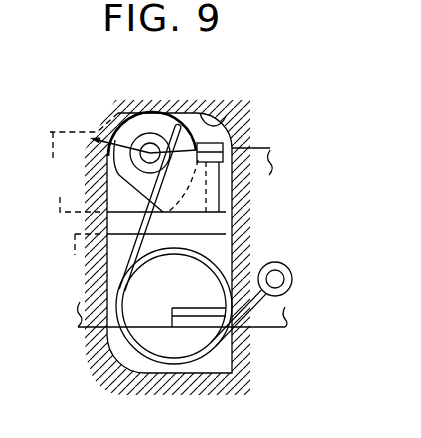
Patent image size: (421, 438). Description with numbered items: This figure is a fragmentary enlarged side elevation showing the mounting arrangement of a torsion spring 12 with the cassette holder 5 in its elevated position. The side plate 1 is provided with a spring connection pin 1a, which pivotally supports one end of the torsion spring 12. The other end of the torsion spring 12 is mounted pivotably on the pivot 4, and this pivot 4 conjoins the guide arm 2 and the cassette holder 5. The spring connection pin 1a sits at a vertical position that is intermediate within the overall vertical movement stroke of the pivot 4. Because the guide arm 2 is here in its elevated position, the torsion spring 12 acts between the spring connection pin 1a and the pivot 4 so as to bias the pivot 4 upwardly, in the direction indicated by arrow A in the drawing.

The side plate 1 is at (202, 121).
The spring connection pin 1a is at (292, 273).
The guide arm 2 is at (117, 117).
The pivot 4 is at (149, 151).
The cassette holder 5 is at (141, 309).
The torsion spring 12 is at (200, 352).
The arrow A is at (96, 141).